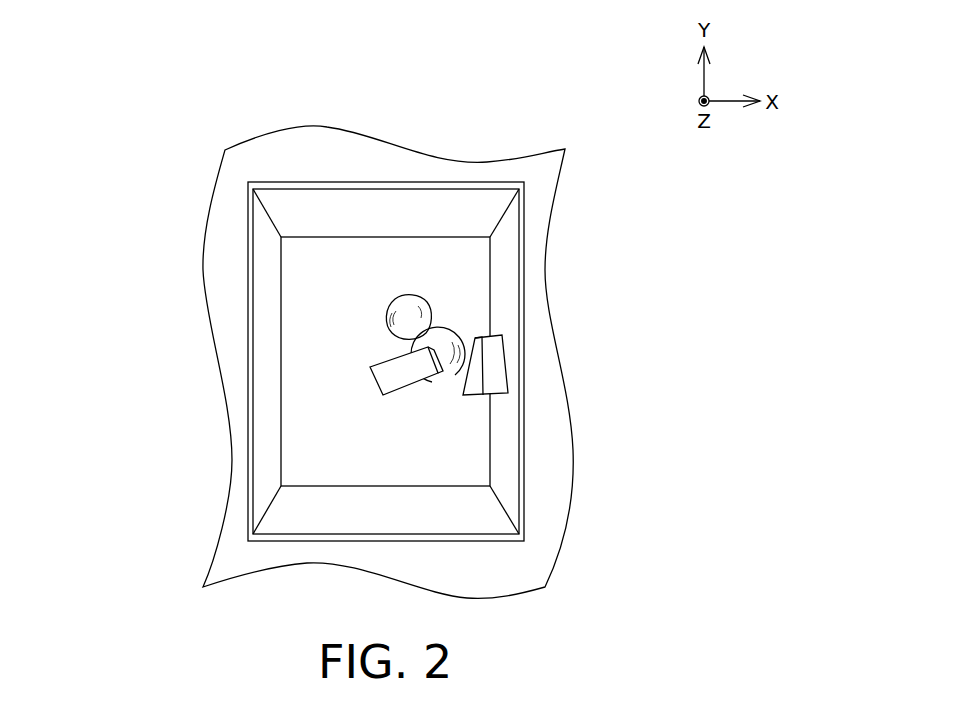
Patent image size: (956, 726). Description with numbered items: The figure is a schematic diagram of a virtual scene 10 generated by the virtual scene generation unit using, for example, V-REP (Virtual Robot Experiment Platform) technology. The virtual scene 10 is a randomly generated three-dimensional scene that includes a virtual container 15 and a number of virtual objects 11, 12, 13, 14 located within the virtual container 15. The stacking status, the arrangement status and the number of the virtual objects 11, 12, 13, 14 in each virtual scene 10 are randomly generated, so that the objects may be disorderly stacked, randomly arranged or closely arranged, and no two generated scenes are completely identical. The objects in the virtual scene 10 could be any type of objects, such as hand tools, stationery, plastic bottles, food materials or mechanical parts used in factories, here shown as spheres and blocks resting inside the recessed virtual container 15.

The virtual scene 10 is at (572, 501).
The virtual container 15 is at (267, 463).
The virtual object 11 is at (440, 341).
The virtual object 14 is at (415, 305).
The virtual object 13 is at (383, 375).
The virtual object 12 is at (490, 362).